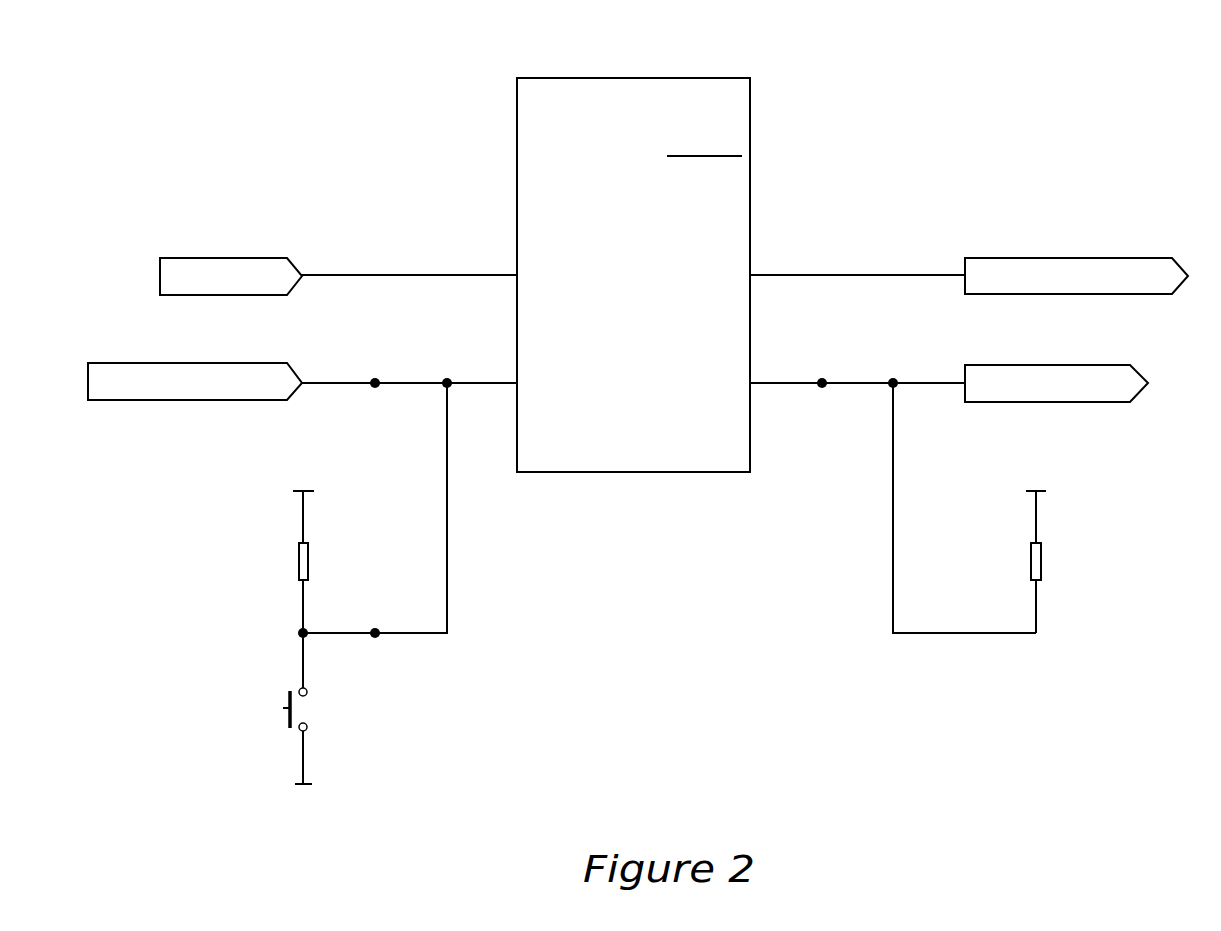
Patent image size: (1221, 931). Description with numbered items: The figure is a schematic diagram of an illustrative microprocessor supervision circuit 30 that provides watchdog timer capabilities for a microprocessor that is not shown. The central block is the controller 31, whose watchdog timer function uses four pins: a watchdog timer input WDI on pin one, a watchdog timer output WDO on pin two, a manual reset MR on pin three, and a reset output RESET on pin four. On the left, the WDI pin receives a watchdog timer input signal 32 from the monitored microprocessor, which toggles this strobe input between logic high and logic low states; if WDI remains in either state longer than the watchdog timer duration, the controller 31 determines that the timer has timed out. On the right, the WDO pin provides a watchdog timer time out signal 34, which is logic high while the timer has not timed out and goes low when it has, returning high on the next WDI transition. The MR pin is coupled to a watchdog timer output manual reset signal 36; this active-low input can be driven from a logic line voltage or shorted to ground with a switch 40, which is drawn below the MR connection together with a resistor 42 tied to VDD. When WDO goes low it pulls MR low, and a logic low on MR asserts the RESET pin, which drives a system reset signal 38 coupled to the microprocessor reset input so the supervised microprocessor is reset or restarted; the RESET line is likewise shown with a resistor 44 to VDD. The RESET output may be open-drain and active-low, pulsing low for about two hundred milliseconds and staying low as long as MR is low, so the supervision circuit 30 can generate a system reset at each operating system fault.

The microprocessor supervision circuit 30 is at (878, 70).
The controller 31 is at (517, 138).
The watchdog timer input signal 32 is at (222, 258).
The watchdog timer time out signal 34 is at (1068, 258).
The watchdog timer output manual reset signal 36 is at (188, 363).
The system reset signal 38 is at (1045, 365).
The switch 40 is at (283, 708).
The pull-up resistor 42 is at (299, 557).
The pull-up resistor 44 is at (1041, 560).